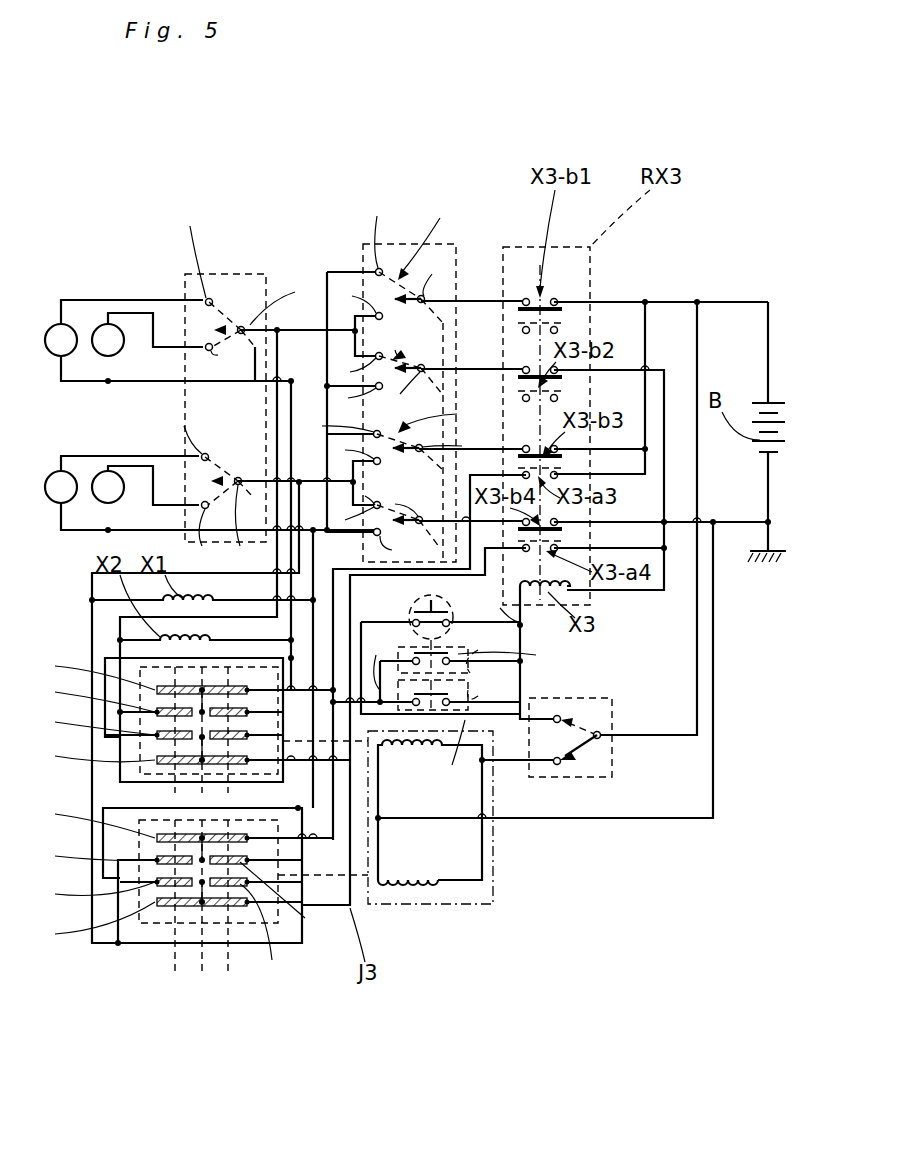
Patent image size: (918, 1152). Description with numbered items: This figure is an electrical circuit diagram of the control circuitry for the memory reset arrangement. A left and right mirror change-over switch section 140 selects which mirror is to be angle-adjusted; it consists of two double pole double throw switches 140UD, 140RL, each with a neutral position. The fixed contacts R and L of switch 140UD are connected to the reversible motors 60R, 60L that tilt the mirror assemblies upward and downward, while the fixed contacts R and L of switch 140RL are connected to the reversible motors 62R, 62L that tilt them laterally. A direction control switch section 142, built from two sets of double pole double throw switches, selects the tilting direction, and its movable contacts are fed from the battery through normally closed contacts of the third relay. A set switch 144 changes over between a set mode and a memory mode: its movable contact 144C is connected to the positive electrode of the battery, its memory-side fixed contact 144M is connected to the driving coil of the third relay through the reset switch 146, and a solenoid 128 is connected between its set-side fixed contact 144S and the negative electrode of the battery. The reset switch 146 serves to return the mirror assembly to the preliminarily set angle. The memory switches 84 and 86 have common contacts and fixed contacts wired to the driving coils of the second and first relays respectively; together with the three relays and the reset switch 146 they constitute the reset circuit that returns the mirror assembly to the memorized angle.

The reversible motor 60R is at (52, 322).
The reversible motor 60L is at (100, 322).
The reversible motor 62R is at (52, 469).
The reversible motor 62L is at (100, 469).
The left and right mirror change-over switch section 140 is at (228, 274).
The double pole double throw switch 140UD is at (248, 300).
The double pole double throw switch 140RL is at (226, 446).
The direction control switch section 142 is at (400, 244).
The memory switch 84 is at (140, 667).
The memory switch 86 is at (279, 924).
The reset switch 146 is at (410, 612).
The solenoid 128 is at (478, 906).
The set switch 144 is at (582, 764).
The fixed contact at the memory side 144M is at (562, 715).
The movable contact 144C is at (600, 740).
The set side fixed contact 144S is at (555, 765).